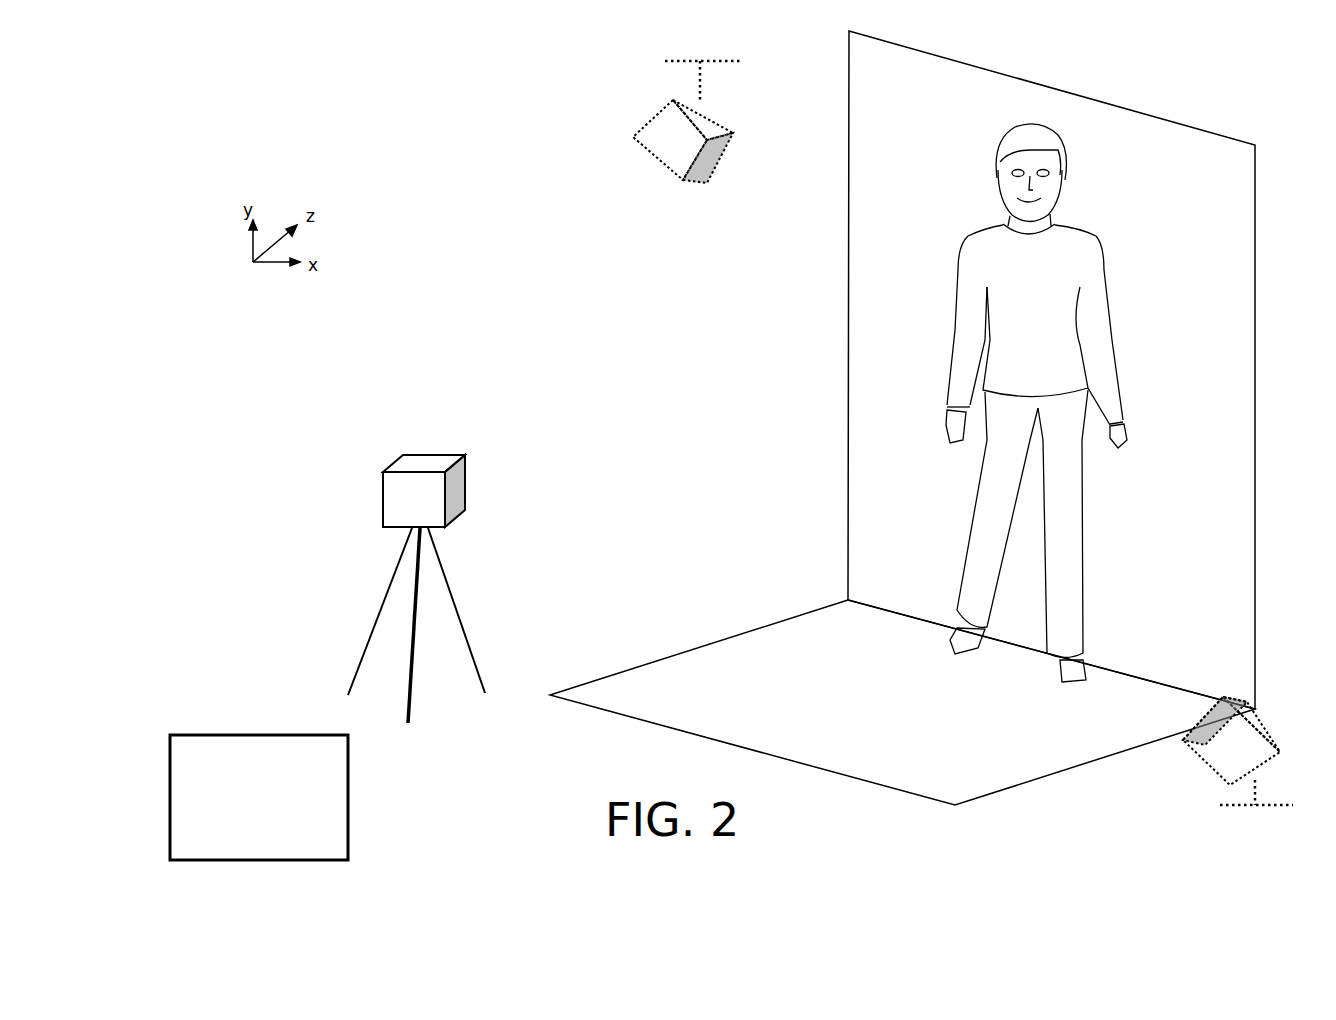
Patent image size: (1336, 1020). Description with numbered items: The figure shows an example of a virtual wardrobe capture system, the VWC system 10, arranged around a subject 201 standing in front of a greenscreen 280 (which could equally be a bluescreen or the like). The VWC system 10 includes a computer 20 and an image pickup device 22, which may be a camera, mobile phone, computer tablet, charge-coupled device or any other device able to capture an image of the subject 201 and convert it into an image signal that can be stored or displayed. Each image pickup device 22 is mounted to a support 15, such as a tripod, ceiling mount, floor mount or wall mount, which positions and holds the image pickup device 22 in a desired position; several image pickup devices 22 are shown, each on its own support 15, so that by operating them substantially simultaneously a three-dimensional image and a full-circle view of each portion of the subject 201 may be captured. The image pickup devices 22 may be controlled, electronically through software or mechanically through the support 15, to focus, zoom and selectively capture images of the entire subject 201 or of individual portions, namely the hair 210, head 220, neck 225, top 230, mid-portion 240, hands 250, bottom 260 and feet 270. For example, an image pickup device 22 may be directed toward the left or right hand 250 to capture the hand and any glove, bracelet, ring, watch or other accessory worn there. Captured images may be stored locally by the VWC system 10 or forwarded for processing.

The VWC system 10 is at (248, 98).
The support 15 is at (702, 70).
The computer 20 is at (259, 797).
The image pickup device 22 is at (647, 127).
The subject 201 is at (1053, 311).
The hair 210 is at (998, 153).
The head 220 is at (1057, 190).
The neck 225 is at (1048, 218).
The top 230 is at (1088, 272).
The mid-portion 240 is at (1063, 398).
The hands 250 is at (1122, 438).
The bottom 260 is at (992, 512).
The feet 270 is at (957, 645).
The greenscreen 280 is at (863, 348).